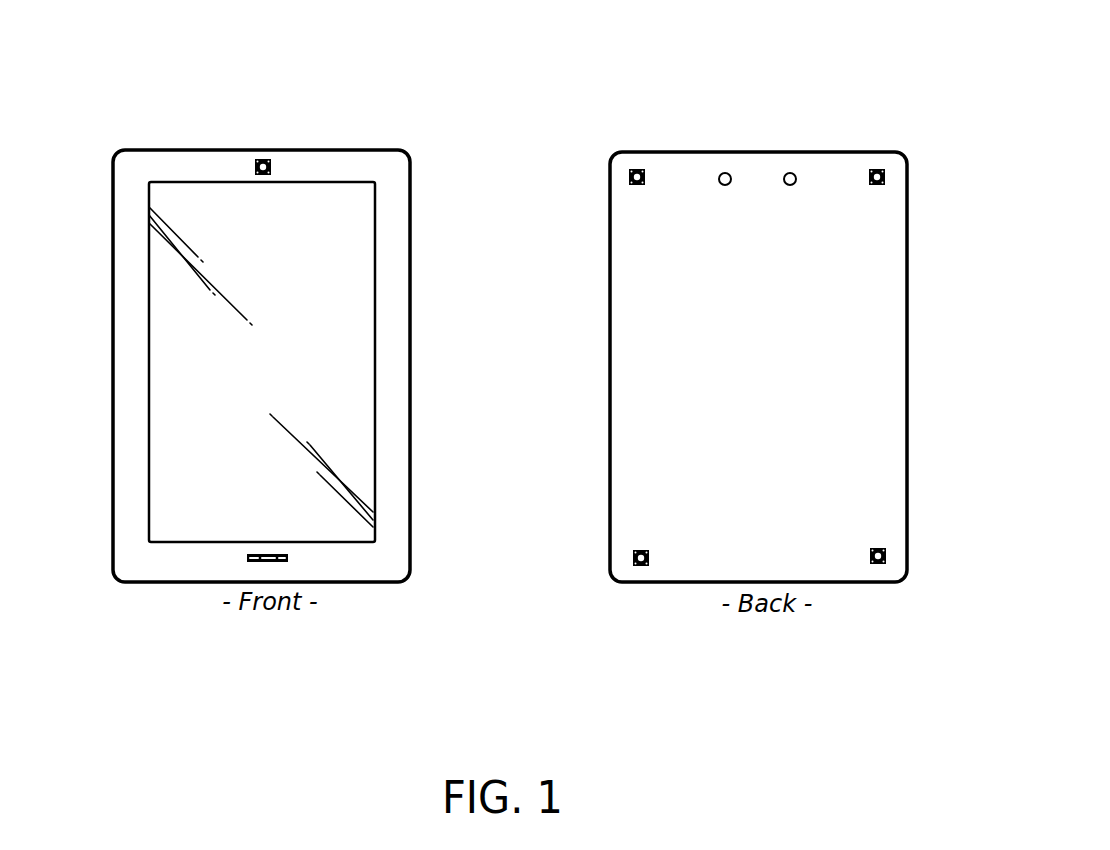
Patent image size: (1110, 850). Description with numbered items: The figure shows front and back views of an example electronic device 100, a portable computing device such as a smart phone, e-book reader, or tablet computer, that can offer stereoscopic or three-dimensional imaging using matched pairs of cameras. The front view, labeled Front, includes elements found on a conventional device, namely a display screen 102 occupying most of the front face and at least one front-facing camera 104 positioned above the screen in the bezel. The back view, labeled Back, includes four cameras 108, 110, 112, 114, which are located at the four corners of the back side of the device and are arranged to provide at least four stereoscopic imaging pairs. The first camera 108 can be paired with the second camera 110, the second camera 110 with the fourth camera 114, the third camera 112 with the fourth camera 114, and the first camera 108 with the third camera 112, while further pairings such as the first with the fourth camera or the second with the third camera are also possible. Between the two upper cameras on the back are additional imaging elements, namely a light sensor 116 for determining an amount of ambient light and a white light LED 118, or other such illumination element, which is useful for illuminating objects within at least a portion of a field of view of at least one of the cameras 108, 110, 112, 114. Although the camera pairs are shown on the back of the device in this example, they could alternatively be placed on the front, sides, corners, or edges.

The electronic device 100 is at (911, 102).
The display screen 102 is at (149, 192).
The front-facing camera 104 is at (262, 158).
The camera C1 108 is at (637, 168).
The camera C2 110 is at (882, 185).
The camera C3 112 is at (644, 563).
The camera C4 114 is at (887, 555).
The light sensor 116 is at (725, 172).
The white light LED 118 is at (790, 172).